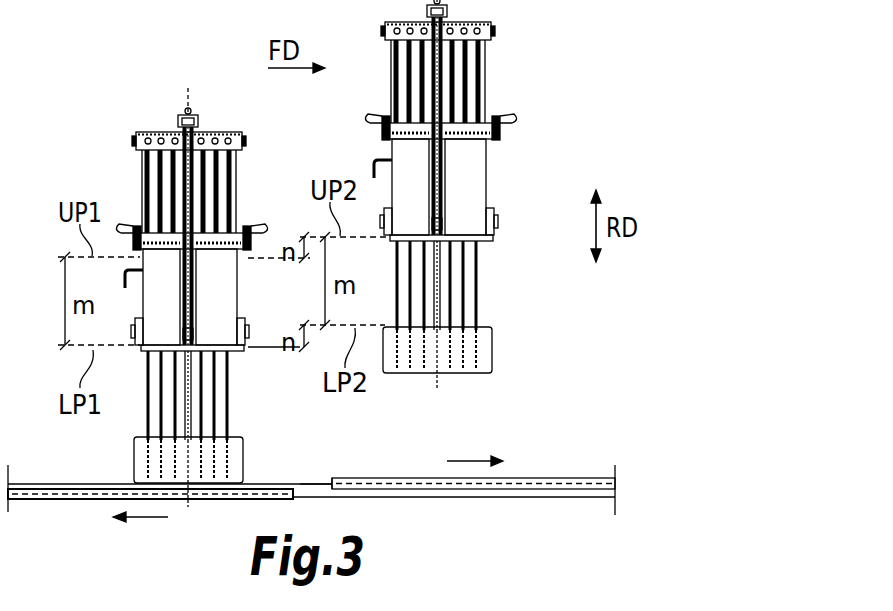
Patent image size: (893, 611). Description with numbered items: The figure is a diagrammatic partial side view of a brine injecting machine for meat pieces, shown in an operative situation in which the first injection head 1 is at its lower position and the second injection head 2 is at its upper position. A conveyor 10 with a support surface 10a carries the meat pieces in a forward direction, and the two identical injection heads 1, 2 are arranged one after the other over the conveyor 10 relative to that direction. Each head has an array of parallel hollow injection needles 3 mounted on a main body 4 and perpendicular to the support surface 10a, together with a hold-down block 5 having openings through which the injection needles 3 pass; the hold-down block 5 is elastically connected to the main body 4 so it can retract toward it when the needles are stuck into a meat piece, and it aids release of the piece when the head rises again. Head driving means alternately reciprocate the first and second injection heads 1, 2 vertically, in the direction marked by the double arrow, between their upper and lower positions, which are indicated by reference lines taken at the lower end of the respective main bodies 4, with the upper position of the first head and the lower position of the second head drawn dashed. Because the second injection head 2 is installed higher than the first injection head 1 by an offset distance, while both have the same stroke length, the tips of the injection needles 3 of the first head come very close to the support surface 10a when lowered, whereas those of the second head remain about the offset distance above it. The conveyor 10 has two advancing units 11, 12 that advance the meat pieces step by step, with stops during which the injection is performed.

The first injection head 1 is at (115, 175).
The second injection head 2 is at (510, 161).
The injection needles 3 is at (232, 394).
The main body 4 is at (227, 228).
The hold-down block 5 is at (240, 452).
The conveyor 10 is at (433, 513).
The support surface 10a is at (310, 483).
The advancing unit 11 is at (533, 480).
The advancing unit 12 is at (90, 500).